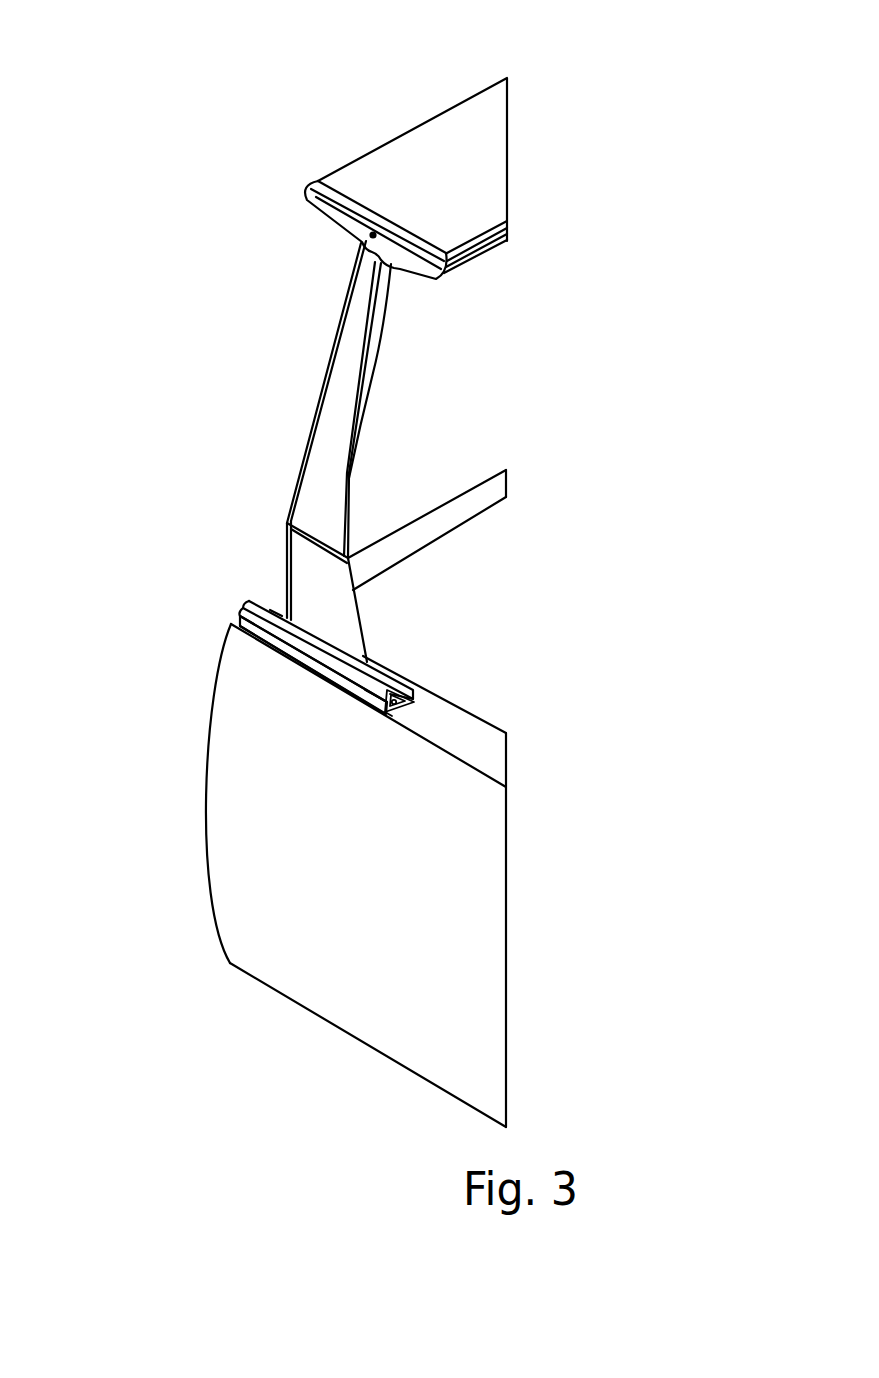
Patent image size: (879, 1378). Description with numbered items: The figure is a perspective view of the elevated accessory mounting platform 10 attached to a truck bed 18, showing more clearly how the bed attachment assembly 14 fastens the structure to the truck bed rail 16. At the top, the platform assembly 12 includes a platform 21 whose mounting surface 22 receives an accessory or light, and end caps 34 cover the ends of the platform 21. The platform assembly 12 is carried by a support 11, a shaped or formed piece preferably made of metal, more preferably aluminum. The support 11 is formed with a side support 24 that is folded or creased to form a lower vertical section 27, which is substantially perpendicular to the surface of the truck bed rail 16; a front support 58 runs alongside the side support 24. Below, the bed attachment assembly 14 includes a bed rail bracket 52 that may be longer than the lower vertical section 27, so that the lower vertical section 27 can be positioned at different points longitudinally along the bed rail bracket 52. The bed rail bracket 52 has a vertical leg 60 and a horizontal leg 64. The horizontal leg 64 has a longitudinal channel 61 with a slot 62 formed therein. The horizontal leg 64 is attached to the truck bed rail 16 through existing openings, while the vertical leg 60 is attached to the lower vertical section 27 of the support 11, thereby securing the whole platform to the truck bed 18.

The elevated accessory mounting platform 10 is at (251, 461).
The supports 11 is at (317, 362).
The platform assembly 12 is at (397, 107).
The bed attachment assembly 14 is at (437, 633).
The truck bed rail 16 is at (482, 733).
The truck bed 18 is at (170, 785).
The platform 21 is at (349, 211).
The mounting surface 22 is at (448, 133).
The side support 24 is at (338, 470).
The lower vertical section 27 is at (345, 610).
The end caps 34 is at (328, 218).
The bed rail bracket 52 is at (317, 697).
The front support 58 is at (383, 315).
The vertical leg 60 is at (373, 695).
The longitudinal channel 61 is at (385, 713).
The slot 62 is at (407, 698).
The horizontal leg 64 is at (425, 689).